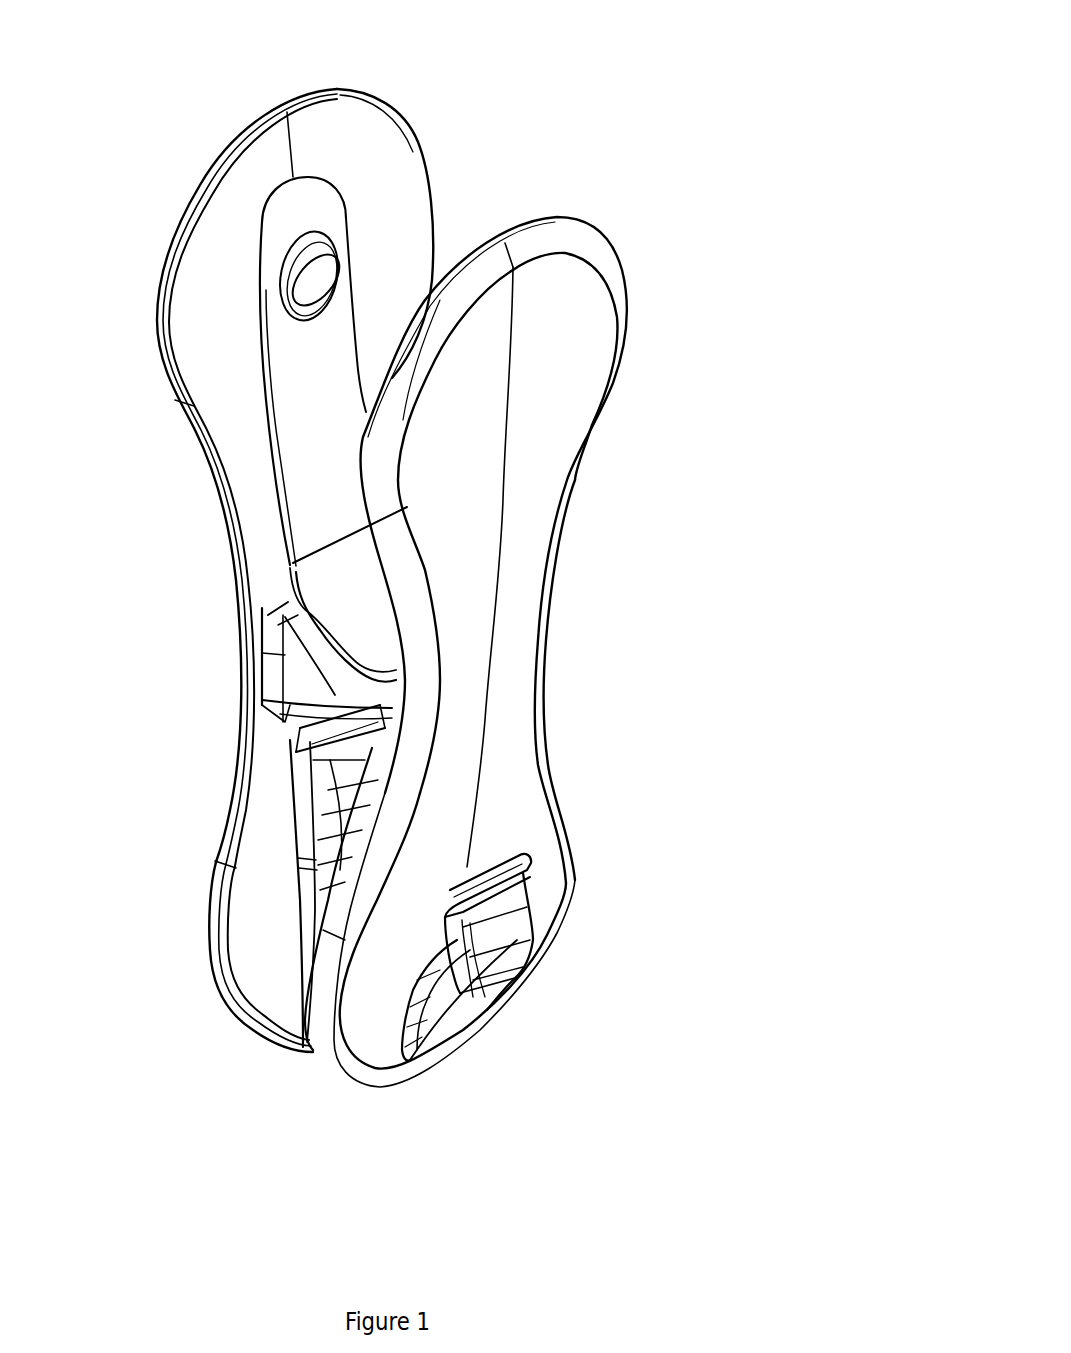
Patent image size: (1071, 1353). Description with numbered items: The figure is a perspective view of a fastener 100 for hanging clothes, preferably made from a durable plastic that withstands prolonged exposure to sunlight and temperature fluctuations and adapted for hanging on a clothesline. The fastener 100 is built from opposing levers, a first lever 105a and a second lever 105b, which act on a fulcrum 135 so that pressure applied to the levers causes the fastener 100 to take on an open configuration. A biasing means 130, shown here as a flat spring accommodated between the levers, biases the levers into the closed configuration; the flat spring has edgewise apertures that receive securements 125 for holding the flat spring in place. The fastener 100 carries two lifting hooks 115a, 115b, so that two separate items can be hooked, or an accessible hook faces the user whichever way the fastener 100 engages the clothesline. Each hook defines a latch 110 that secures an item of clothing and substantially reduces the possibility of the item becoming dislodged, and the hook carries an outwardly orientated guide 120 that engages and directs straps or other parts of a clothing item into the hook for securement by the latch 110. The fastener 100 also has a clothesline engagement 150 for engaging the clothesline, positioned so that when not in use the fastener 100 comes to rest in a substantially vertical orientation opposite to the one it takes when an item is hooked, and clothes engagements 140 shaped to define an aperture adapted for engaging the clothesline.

The fastener 100 is at (638, 105).
The first lever 105a is at (578, 402).
The second lever 105b is at (168, 290).
The latch 110 is at (527, 917).
The hook 115a is at (668, 926).
The hook 115b is at (165, 904).
The guide 120 is at (527, 880).
The securements 125 is at (262, 262).
The biasing means 130 is at (290, 383).
The fulcrum 135 is at (343, 683).
The clothes engagements 140 is at (300, 798).
The clothesline engagement 150 is at (363, 743).